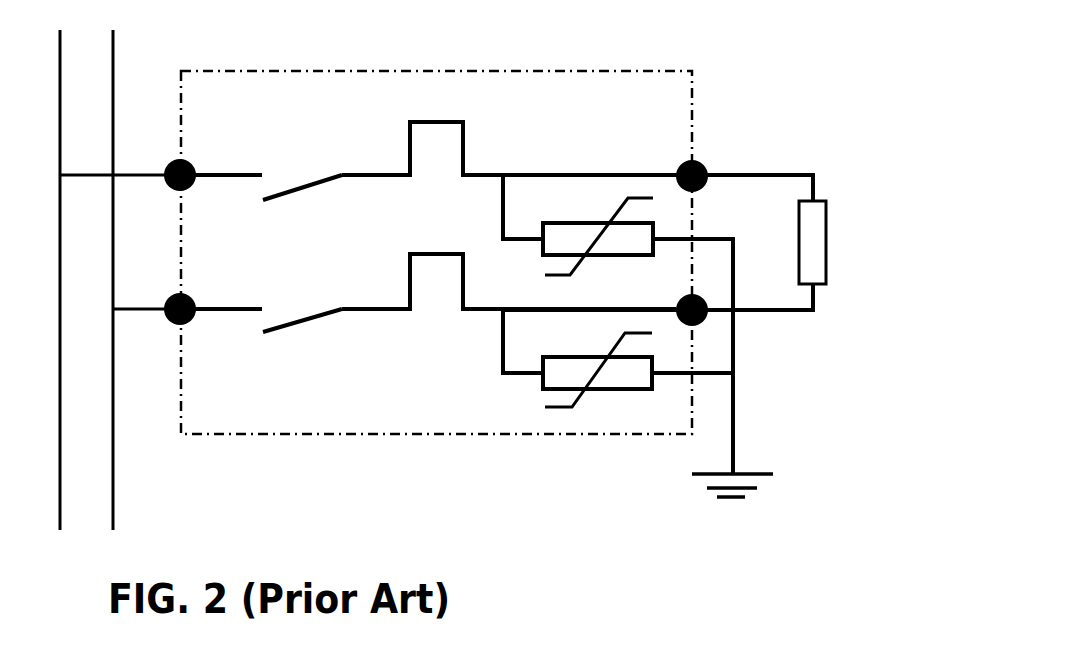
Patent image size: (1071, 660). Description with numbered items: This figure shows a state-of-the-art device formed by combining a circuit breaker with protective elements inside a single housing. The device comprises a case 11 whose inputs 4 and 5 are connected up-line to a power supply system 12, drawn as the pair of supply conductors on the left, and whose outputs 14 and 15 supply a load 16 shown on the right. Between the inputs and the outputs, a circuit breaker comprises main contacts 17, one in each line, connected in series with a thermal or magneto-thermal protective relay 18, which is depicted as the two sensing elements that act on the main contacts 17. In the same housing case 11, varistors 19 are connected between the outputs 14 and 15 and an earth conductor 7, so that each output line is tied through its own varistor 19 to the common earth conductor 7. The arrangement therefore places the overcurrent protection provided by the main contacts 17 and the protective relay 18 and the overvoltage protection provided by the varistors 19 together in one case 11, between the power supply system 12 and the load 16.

The input 4 is at (168, 163).
The input 5 is at (167, 300).
The earth conductor 7 is at (733, 437).
The case 11 is at (650, 70).
The power supply system 12 is at (87, 502).
The output 14 is at (703, 165).
The output 15 is at (705, 315).
The load 16 is at (815, 245).
The main contacts 17 is at (293, 188).
The thermal or magneto-thermal protective relay 18 is at (436, 148).
The varistors 19 is at (580, 223).